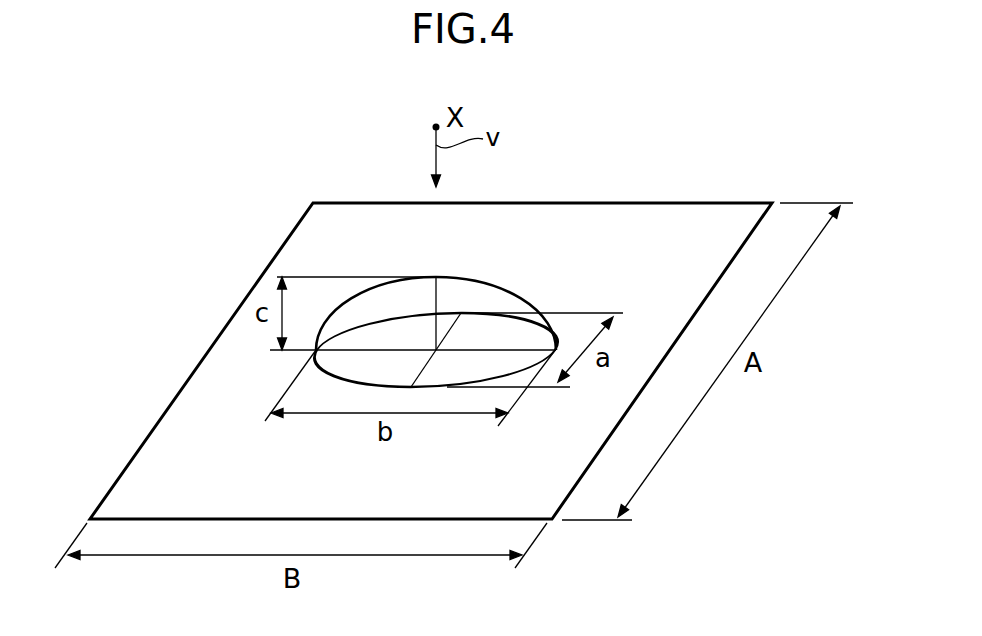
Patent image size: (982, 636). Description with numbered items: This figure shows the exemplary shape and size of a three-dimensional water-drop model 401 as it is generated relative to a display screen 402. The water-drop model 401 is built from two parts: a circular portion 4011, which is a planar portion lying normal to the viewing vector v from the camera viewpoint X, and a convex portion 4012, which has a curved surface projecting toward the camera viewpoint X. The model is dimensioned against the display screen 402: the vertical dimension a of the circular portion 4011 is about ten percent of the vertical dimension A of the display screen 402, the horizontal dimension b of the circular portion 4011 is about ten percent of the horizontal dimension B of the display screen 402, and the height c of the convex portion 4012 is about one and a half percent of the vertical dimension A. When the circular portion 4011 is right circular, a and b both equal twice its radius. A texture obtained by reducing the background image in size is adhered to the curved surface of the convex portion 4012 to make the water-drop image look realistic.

The 3D water-drop model 401 is at (448, 311).
The display screen 402 is at (700, 223).
The circular portion 4011 is at (475, 367).
The convex portion 4012 is at (500, 295).